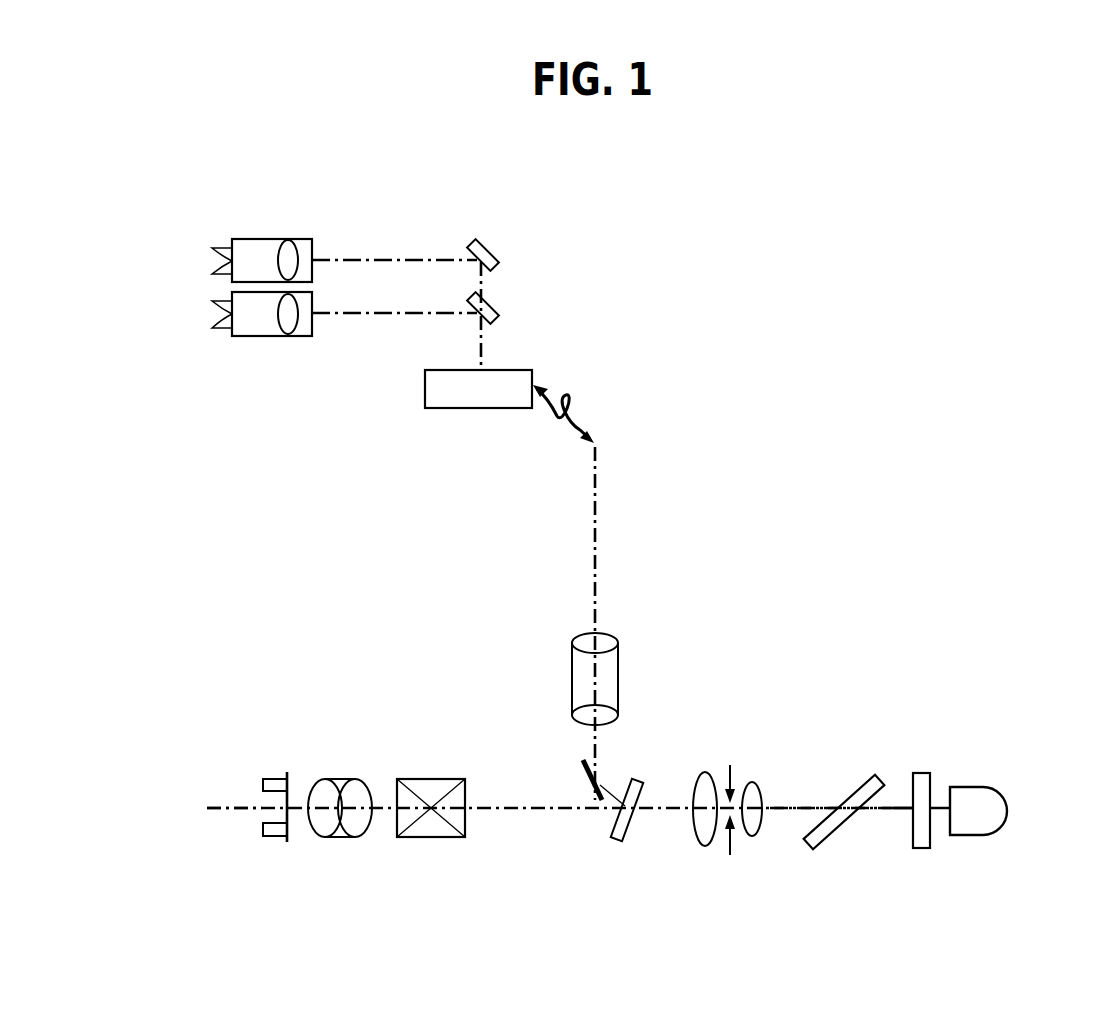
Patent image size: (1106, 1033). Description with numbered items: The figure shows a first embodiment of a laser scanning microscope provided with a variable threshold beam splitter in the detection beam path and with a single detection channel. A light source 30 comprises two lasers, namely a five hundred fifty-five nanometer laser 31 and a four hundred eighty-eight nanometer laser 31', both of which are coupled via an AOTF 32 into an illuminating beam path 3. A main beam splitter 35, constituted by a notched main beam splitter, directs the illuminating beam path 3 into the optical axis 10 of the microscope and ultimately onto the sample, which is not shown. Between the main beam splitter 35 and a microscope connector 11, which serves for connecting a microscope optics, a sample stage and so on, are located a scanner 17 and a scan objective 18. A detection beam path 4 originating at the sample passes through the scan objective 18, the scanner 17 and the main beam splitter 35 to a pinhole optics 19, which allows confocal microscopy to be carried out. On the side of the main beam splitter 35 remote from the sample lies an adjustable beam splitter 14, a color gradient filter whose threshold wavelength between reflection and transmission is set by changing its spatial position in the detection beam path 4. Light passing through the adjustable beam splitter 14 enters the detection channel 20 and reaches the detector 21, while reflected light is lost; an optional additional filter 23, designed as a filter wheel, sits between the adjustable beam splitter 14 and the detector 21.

The illuminating beam path 3 is at (597, 535).
The detection beam path 4 is at (793, 806).
The optical axis 10 is at (230, 803).
The microscope connector 11 is at (277, 780).
The adjustable beam splitter 14 is at (868, 783).
The scanner 17 is at (432, 787).
The scan objective 18 is at (343, 783).
The pinhole optics 19 is at (733, 749).
The detection channel 20 is at (880, 815).
The detector 21 is at (1002, 815).
The additional filter 23 is at (922, 770).
The light source 30 is at (355, 328).
The 555 nm laser 31 is at (265, 227).
The 488 nm laser 31' is at (262, 351).
The AOTF 32 is at (514, 383).
The main beam splitter 35 is at (637, 785).